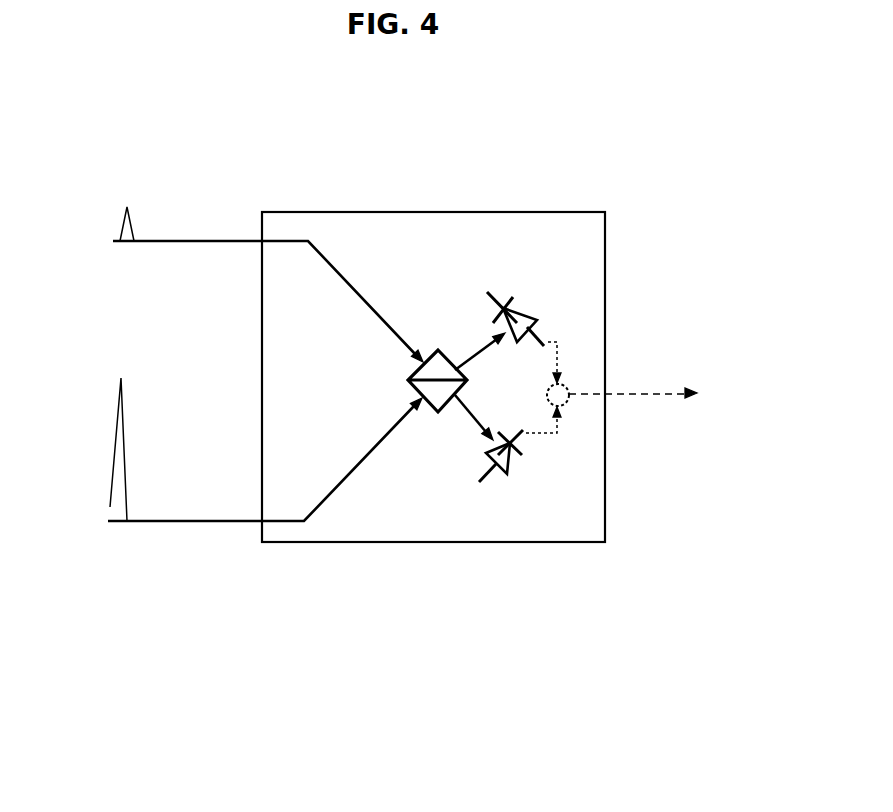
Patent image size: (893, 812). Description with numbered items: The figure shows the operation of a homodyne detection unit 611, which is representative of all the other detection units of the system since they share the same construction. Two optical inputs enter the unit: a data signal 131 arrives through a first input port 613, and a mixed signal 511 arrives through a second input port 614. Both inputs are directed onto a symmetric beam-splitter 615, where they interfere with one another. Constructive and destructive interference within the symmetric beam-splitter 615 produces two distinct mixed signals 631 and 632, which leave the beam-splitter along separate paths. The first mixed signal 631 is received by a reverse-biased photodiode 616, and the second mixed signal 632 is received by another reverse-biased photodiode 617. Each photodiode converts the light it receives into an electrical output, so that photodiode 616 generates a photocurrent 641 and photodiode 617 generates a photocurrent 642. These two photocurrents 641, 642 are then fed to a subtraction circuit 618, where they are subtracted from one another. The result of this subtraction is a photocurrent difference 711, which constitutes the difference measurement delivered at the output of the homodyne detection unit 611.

The data signal 131 is at (140, 185).
The mixed signal 511 is at (147, 378).
The homodyne detection unit 611 is at (340, 542).
The input port 613 is at (262, 242).
The input port 614 is at (262, 521).
The symmetric beam-splitter 615 is at (393, 393).
The reverse-biased photodiode 616 is at (535, 290).
The reverse-biased photodiode 617 is at (458, 456).
The subtraction circuit 618 is at (567, 383).
The mixed signal 631 is at (463, 335).
The mixed signal 632 is at (470, 427).
The photocurrent 641 is at (548, 338).
The photocurrent 642 is at (548, 450).
The photocurrent difference 711 is at (652, 390).